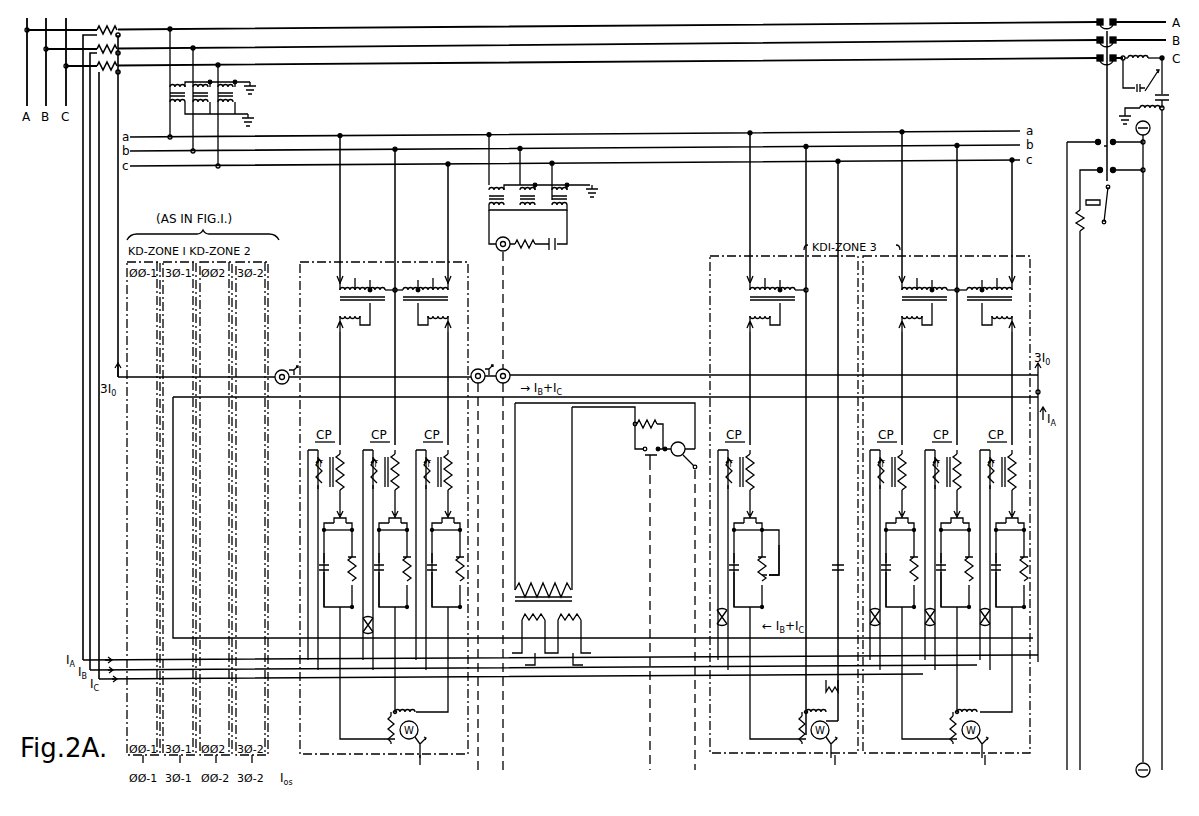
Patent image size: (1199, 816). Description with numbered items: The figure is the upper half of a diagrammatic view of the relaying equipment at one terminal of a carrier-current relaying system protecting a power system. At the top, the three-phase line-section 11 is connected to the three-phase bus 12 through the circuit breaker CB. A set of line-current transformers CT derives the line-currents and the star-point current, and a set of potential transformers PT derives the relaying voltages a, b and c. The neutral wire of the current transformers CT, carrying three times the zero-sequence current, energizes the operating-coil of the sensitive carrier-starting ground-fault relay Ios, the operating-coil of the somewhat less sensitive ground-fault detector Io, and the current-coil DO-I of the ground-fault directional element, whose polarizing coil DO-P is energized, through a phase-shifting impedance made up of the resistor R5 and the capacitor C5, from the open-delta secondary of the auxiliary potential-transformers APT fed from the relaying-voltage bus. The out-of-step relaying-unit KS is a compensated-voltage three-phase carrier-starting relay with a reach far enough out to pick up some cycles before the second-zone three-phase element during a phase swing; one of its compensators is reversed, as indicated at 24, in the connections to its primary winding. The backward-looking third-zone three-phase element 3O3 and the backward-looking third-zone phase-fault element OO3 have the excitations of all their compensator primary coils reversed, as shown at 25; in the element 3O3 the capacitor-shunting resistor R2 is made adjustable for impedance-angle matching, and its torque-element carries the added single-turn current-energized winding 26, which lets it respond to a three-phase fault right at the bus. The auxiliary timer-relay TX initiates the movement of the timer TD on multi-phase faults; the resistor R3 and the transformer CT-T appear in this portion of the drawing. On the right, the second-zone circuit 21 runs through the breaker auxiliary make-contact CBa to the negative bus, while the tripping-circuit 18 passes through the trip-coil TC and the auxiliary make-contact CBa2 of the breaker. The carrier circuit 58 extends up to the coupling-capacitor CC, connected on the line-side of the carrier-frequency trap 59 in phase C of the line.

The three-phase bus 12 is at (66, 12).
The three-phase line-section 11 is at (1158, 21).
The line-current transformers CT is at (108, 342).
The potential transformers PT is at (202, 97).
The circuit breaker CB is at (1106, 91).
The carrier-frequency trap 59 is at (1152, 75).
The coupling-capacitor CC is at (1169, 100).
The carrier circuit 58 is at (1151, 446).
The second-zone relaying circuit 21 is at (1077, 456).
The tripping-circuit 18 is at (1088, 529).
The auxiliary make-contact of circuit breaker CBa is at (1121, 150).
The auxiliary circuit-breaker make-contact CBa' CBa2 is at (1112, 196).
The trip-coil TC is at (1084, 490).
The out-of-step relaying-unit KS is at (384, 460).
The reversed compensator connection 24 is at (373, 625).
The reversed compensator excitation 25 is at (863, 617).
The single-turn current-energized winding 26 is at (830, 688).
The sensitive carrier-starting ground-fault relay Ios is at (294, 368).
The ground-fault detector Io is at (479, 569).
The current-coil of ground-fault directional element DO-I is at (761, 518).
The polarizing coil of ground-fault directional element DO-P is at (528, 230).
The auxiliary potential-transformers APT is at (527, 173).
The resistor R5 is at (525, 251).
The capacitor C5 is at (549, 237).
The current transformer CT-T is at (586, 598).
The resistor R3 is at (648, 428).
The auxiliary timer-relay TX is at (653, 604).
The timer TD is at (685, 605).
The capacitor-shunting resistor R2' R2 is at (762, 575).
The backward-looking third-zone three-phase element 3φ–3' 3O3 is at (784, 459).
The backward-looking third-zone phase-fault element φφ–3' OO3 is at (946, 458).